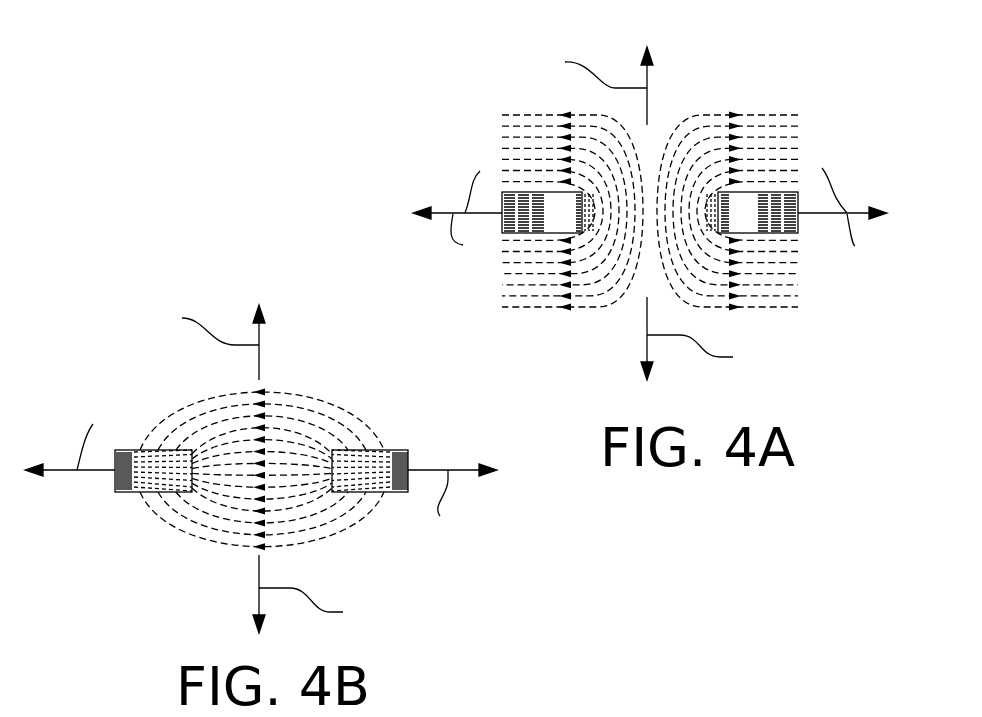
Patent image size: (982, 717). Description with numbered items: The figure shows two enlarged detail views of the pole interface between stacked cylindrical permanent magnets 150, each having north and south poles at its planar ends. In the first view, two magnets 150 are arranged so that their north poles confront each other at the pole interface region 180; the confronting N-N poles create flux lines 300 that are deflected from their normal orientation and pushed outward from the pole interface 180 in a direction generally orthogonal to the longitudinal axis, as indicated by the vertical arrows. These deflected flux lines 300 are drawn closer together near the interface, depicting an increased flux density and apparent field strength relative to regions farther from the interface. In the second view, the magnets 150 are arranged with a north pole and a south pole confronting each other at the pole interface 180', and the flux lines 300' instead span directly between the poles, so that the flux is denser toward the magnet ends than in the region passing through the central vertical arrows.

In FIG. 4A, the pole interface region 180 is at (650, 206).
In FIG. 4A, the flux lines 300 is at (654, 210).
In FIG. 4A, the magnet 150 is at (650, 257).
In FIG. 4B, the magnet 150 is at (261, 509).
In FIG. 4B, the pole interface 180' is at (261, 469).
In FIG. 4B, the flux lines 300' is at (235, 472).